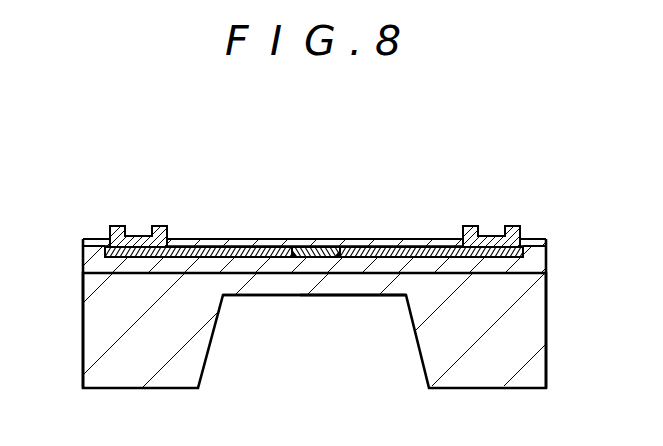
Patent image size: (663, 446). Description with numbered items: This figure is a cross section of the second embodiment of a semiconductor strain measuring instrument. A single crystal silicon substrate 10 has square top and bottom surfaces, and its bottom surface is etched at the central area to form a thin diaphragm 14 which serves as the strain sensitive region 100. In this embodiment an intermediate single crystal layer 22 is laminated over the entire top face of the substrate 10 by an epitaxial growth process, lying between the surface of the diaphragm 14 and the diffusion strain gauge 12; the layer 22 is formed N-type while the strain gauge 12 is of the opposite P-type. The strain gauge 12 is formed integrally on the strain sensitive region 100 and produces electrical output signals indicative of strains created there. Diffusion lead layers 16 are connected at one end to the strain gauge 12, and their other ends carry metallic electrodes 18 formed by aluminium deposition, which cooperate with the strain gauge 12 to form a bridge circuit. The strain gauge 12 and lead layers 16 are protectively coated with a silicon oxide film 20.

The single crystal silicon substrate 10 is at (538, 343).
The diffusion strain gauge 12 is at (317, 247).
The diaphragm 14 is at (270, 287).
The diffusion lead layer 16 is at (242, 247).
The metallic electrode 18 is at (138, 236).
The silicon oxide film 20 is at (357, 239).
The intermediate single crystal layer 22 is at (537, 267).
The strain sensitive region 100 is at (364, 287).